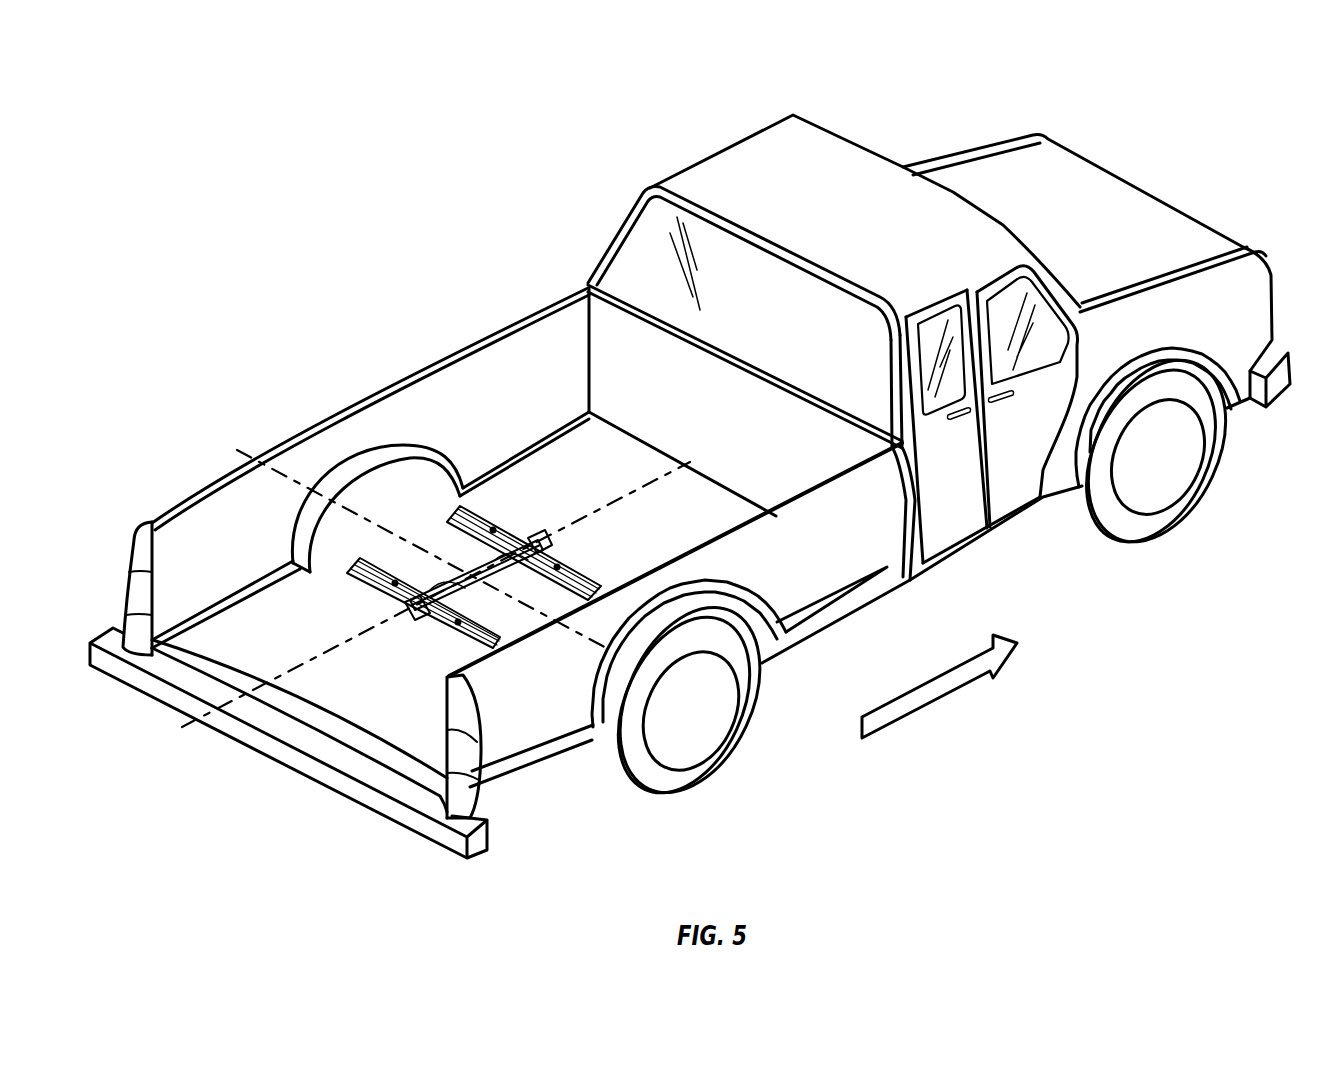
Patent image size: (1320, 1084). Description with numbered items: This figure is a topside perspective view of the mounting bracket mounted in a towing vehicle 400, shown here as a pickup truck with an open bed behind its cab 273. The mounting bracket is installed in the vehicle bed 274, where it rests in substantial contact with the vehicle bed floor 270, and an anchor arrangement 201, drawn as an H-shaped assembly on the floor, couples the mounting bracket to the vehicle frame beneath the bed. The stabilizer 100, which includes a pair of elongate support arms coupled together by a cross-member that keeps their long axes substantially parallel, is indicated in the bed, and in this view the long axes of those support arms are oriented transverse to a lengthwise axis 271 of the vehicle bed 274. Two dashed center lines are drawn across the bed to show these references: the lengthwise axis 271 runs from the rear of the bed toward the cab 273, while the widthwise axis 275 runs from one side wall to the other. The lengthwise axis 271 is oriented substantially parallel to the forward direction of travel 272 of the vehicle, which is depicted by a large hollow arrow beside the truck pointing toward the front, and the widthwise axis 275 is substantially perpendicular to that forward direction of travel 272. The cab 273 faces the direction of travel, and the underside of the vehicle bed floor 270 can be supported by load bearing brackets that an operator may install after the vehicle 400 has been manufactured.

The vehicle 400 is at (1070, 110).
The cab 273 is at (688, 138).
The vehicle bed 274 is at (504, 279).
The vehicle bed floor 270 is at (585, 480).
The stabilizer 100 is at (449, 541).
The widthwise axis 275 is at (219, 443).
The anchor arrangement 201 is at (483, 567).
The lengthwise axis 271 is at (183, 730).
The forward direction of travel 272 is at (938, 697).